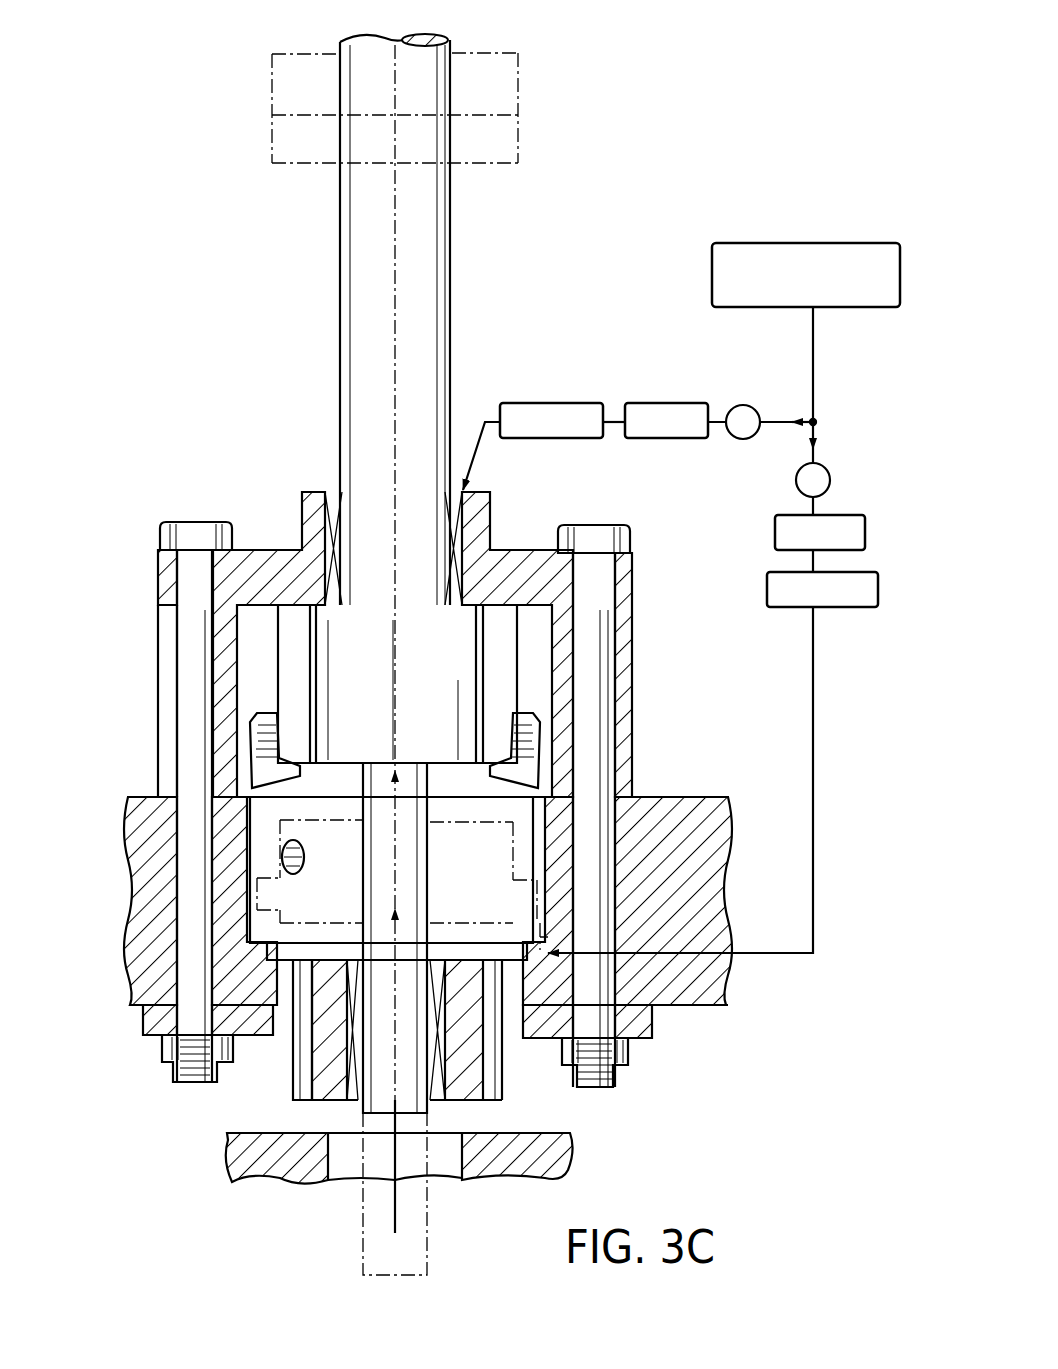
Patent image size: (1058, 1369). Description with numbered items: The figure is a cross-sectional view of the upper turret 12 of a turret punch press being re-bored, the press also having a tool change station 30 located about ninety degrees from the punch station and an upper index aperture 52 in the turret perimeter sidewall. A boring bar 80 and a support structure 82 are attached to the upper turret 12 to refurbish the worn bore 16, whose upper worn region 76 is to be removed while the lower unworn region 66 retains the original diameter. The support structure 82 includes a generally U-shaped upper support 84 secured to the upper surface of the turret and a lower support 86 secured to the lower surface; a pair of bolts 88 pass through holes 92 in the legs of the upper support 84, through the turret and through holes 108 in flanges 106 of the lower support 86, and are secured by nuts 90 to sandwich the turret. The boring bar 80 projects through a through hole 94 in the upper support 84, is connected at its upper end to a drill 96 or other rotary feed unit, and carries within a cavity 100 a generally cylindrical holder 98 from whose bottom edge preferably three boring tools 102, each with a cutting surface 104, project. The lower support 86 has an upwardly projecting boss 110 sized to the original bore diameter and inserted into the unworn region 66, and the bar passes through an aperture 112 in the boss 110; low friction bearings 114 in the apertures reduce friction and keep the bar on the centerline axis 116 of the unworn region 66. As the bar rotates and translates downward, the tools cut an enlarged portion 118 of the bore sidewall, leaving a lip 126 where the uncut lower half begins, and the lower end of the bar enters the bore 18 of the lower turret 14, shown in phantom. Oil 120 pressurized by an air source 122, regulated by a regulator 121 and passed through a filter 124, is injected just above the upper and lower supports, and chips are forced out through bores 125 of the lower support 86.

The upper turret 12 is at (716, 795).
The lower turret 14 is at (230, 1181).
The bore 16 is at (138, 1007).
The bore 18 is at (340, 1170).
The tool change station 30 is at (606, 106).
The upper index aperture 52 is at (305, 857).
The unworn region 66 is at (250, 1036).
The worn region 76 is at (247, 941).
The boring bar 80 is at (458, 314).
The support structure 82 is at (260, 483).
The upper support 84 is at (633, 676).
The lower support 86 is at (656, 1028).
The bolts 88 is at (190, 710).
The nuts 90 is at (172, 1050).
The holes 92 is at (158, 578).
The through hole 94 is at (343, 505).
The drill 96 is at (520, 57).
The holder 98 is at (441, 680).
The cavity 100 is at (527, 590).
The boring tools 102 is at (516, 754).
The cutting surface 104 is at (262, 785).
The flanges 106 is at (645, 1042).
The holes 108 is at (165, 1006).
The boss 110 is at (533, 980).
The aperture 112 is at (345, 1097).
The bearing 114 is at (346, 601).
The centerline axis 116 is at (393, 686).
The cut portion 118 is at (630, 863).
The oil 120 is at (675, 403).
The regulator 121 is at (795, 476).
The air source 122 is at (878, 243).
The filter 124 is at (549, 403).
The bores 125 is at (297, 1000).
The lip 126 is at (548, 923).